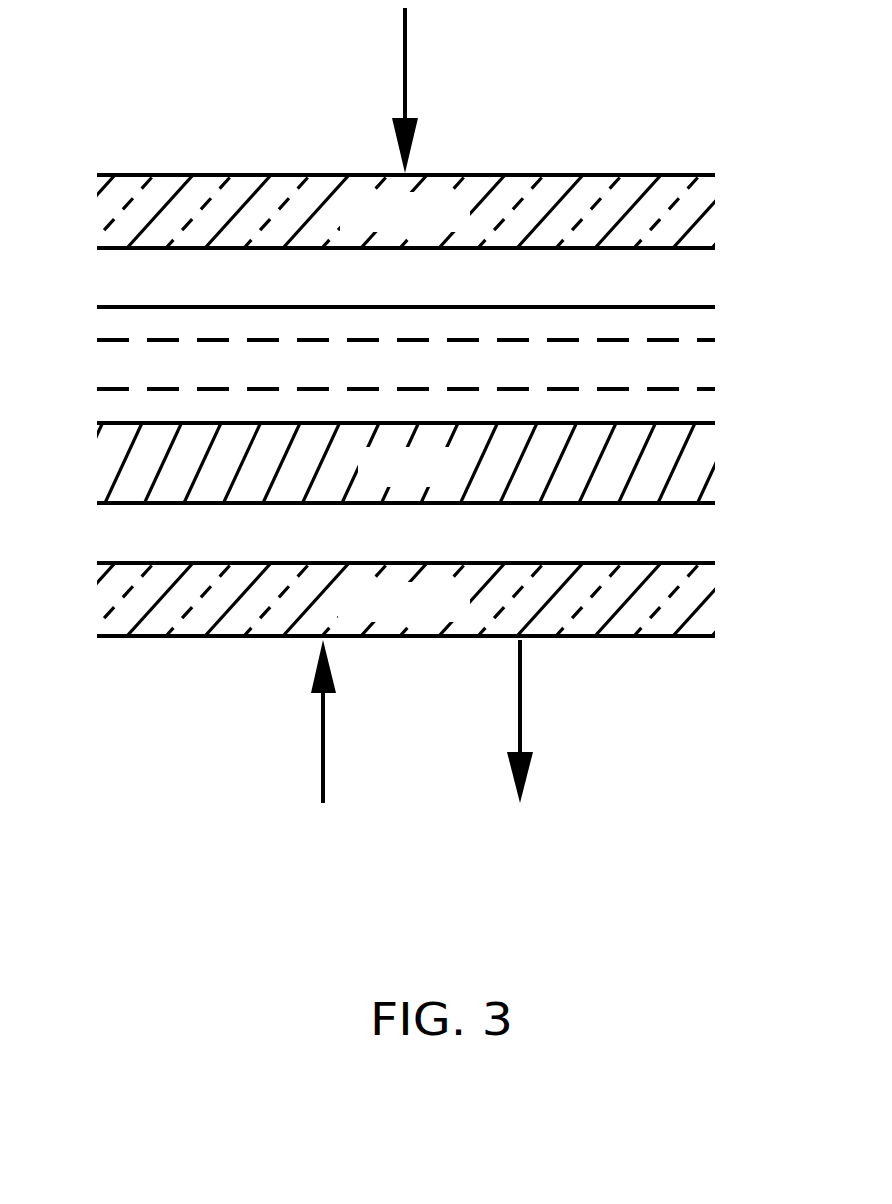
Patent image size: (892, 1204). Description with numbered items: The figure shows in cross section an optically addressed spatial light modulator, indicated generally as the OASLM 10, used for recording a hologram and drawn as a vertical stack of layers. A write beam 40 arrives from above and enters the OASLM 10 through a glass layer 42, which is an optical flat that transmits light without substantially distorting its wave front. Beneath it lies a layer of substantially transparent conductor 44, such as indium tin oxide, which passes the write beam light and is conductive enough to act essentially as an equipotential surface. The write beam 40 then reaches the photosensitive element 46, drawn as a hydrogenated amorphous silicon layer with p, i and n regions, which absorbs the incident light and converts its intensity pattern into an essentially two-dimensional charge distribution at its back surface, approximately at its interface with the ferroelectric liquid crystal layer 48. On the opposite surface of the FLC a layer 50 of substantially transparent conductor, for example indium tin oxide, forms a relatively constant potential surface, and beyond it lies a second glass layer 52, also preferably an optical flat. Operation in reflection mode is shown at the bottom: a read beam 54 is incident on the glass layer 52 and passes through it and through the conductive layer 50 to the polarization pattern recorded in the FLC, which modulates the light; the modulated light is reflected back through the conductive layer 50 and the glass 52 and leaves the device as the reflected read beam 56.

The OASLM 10 is at (452, 536).
The write beam 40 is at (562, 90).
The glass layer 42 is at (733, 217).
The substantially transparent conductor 44 is at (733, 283).
The photosensitive element 46 is at (733, 310).
The ferroelectric liquid crystal layer 48 is at (733, 467).
The substantially transparent conductor layer 50 is at (740, 540).
The second glass layer 52 is at (740, 605).
The read beam 54 is at (204, 721).
The reflected read beam 56 is at (610, 719).